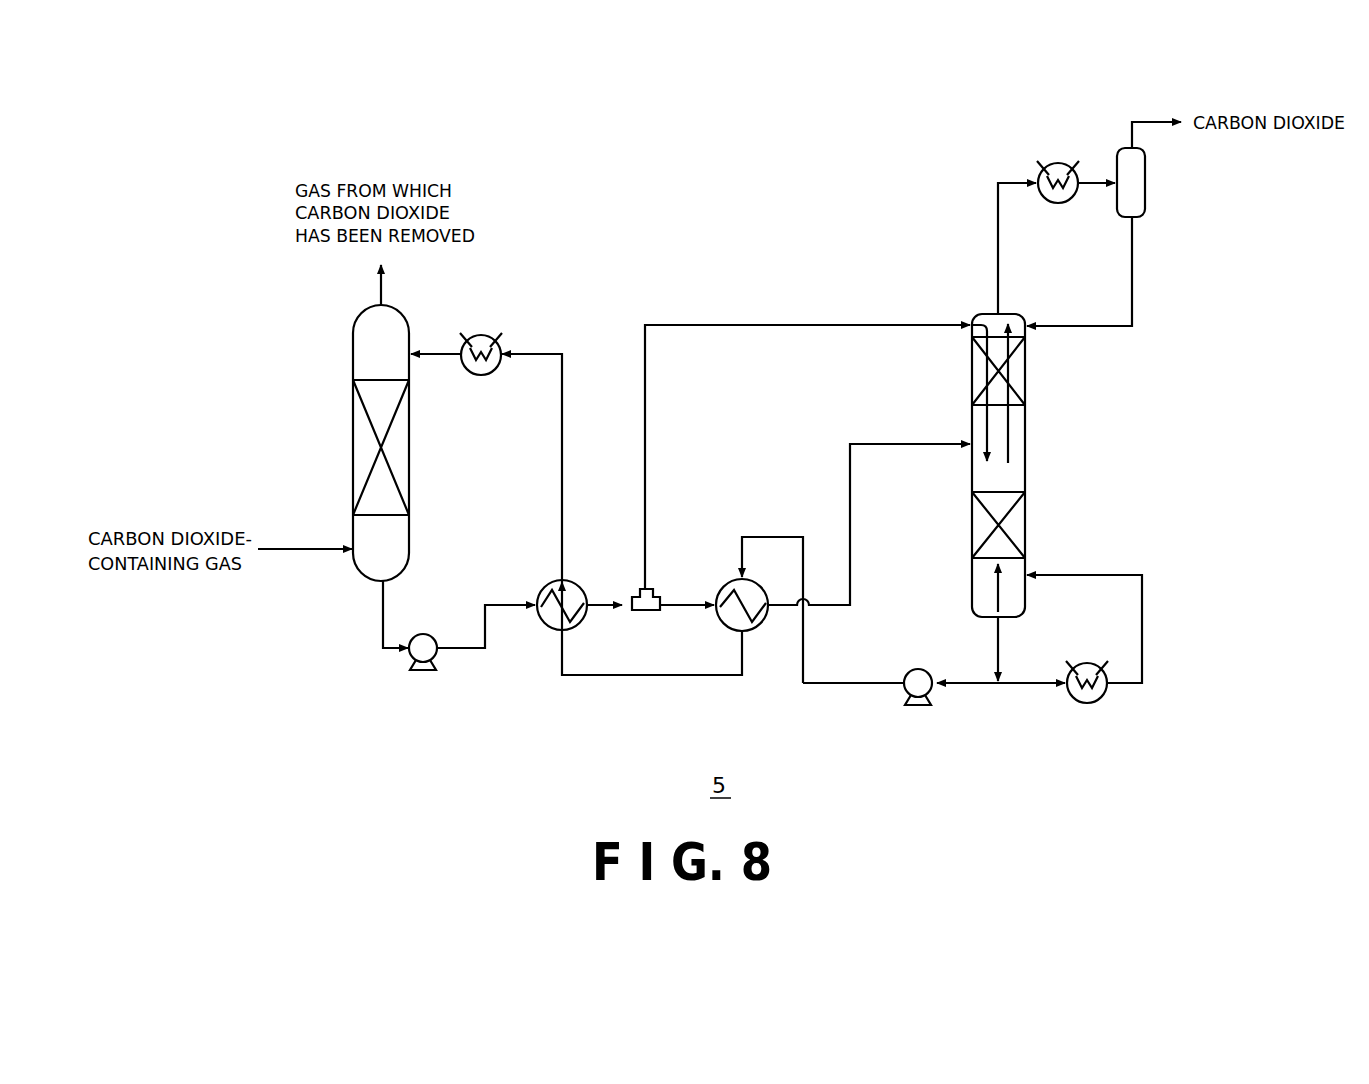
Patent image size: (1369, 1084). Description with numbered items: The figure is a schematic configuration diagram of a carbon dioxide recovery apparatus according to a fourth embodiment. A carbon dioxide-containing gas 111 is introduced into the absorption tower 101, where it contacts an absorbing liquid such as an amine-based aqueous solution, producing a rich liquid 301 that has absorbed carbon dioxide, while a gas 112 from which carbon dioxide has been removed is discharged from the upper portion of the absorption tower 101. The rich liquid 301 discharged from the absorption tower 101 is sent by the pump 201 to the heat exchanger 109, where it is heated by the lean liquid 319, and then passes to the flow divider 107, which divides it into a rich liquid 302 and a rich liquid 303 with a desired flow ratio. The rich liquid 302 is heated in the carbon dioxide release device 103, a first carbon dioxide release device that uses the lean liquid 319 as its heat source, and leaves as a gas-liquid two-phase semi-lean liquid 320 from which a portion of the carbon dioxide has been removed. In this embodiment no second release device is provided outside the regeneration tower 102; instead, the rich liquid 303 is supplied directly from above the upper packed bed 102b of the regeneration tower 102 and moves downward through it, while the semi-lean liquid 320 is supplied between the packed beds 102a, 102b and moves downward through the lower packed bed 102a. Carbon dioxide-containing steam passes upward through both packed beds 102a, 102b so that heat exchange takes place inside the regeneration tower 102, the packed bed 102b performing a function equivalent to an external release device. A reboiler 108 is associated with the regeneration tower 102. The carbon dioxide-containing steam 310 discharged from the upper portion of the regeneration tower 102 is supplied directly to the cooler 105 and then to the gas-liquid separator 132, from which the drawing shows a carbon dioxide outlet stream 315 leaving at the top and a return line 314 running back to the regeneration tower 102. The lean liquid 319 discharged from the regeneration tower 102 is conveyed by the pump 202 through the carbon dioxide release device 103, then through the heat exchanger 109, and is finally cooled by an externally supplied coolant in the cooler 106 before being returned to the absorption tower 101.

The absorption tower 101 is at (353, 355).
The regeneration tower 102 is at (1045, 497).
The packed bed 102a is at (1012, 527).
The packed bed 102b is at (1027, 367).
The carbon dioxide release device 103 is at (762, 624).
The cooler 105 is at (1056, 205).
The cooler 106 is at (480, 334).
The flow divider 107 is at (645, 612).
The reboiler 108 is at (1094, 703).
The heat exchanger 109 is at (542, 586).
The carbon dioxide-containing gas 111 is at (299, 545).
The gas from which carbon dioxide has been removed 112 is at (381, 286).
The gas-liquid separator 132 is at (1148, 185).
The pump 201 is at (425, 634).
The pump 202 is at (918, 668).
The rich liquid 301 is at (383, 628).
The rich liquid 302 is at (670, 600).
The rich liquid 303 is at (648, 408).
The carbon dioxide-containing steam 310 is at (997, 245).
The reflux water line 314 is at (1134, 286).
The carbon dioxide outlet line 315 is at (1137, 118).
The lean liquid 319 is at (443, 356).
The semi-lean liquid 320 is at (850, 504).